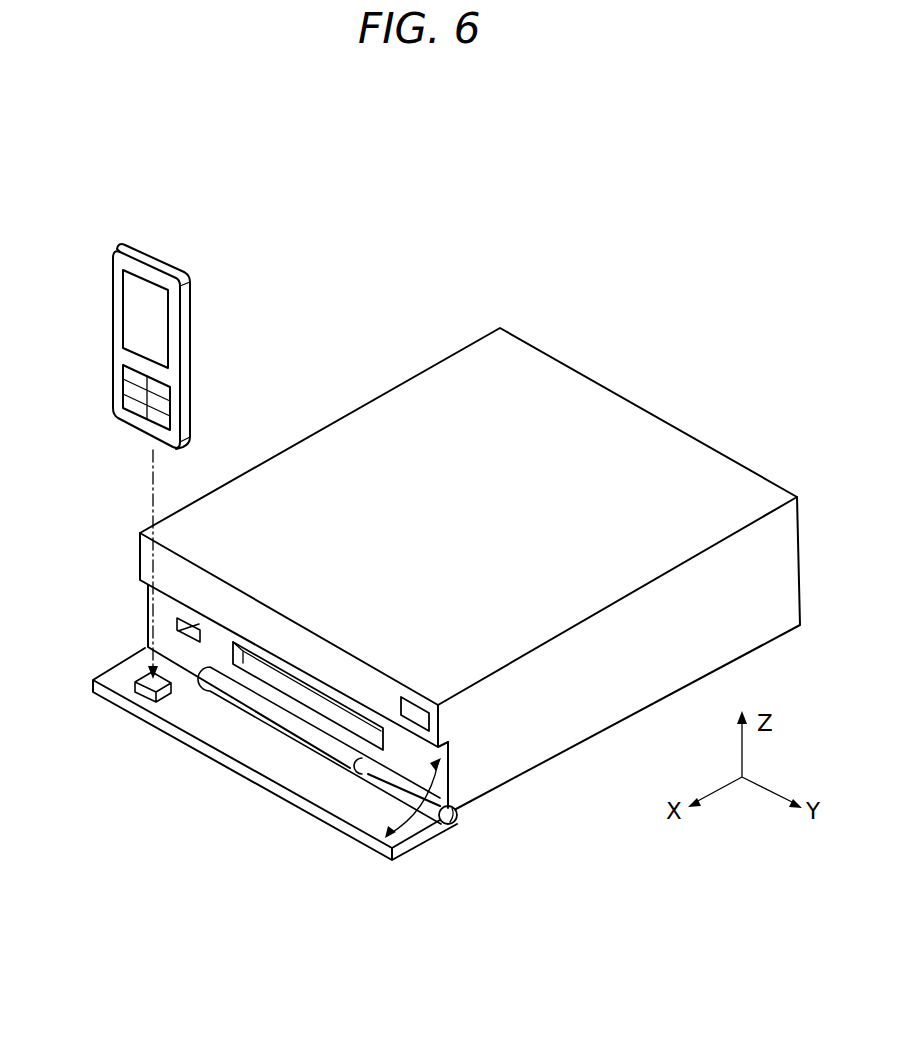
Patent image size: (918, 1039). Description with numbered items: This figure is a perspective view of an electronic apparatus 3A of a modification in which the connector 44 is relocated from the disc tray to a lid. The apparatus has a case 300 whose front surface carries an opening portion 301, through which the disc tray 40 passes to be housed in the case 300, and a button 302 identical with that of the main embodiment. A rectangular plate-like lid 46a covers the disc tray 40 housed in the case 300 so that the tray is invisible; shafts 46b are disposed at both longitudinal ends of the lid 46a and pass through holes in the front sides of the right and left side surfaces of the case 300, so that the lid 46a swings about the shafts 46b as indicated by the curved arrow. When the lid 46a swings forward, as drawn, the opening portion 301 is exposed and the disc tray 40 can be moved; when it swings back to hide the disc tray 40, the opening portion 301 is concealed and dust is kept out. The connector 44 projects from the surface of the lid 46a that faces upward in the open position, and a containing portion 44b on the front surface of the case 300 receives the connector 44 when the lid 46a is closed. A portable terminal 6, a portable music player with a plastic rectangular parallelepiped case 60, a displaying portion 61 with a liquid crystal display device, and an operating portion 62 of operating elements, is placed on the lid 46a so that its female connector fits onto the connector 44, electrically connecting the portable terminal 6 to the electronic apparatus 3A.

The portable terminal 6 is at (219, 331).
The case 60 is at (116, 278).
The displaying portion 61 is at (163, 330).
The operating portion 62 is at (130, 395).
The case 300 is at (622, 405).
The electronic apparatus 3A is at (537, 787).
The containing portion 44b is at (180, 627).
The connector 44 is at (150, 692).
The opening portion 301 is at (238, 653).
The disc tray 40 is at (336, 712).
The lid 46a is at (366, 813).
The shafts 46b is at (452, 822).
The button 302 is at (420, 718).